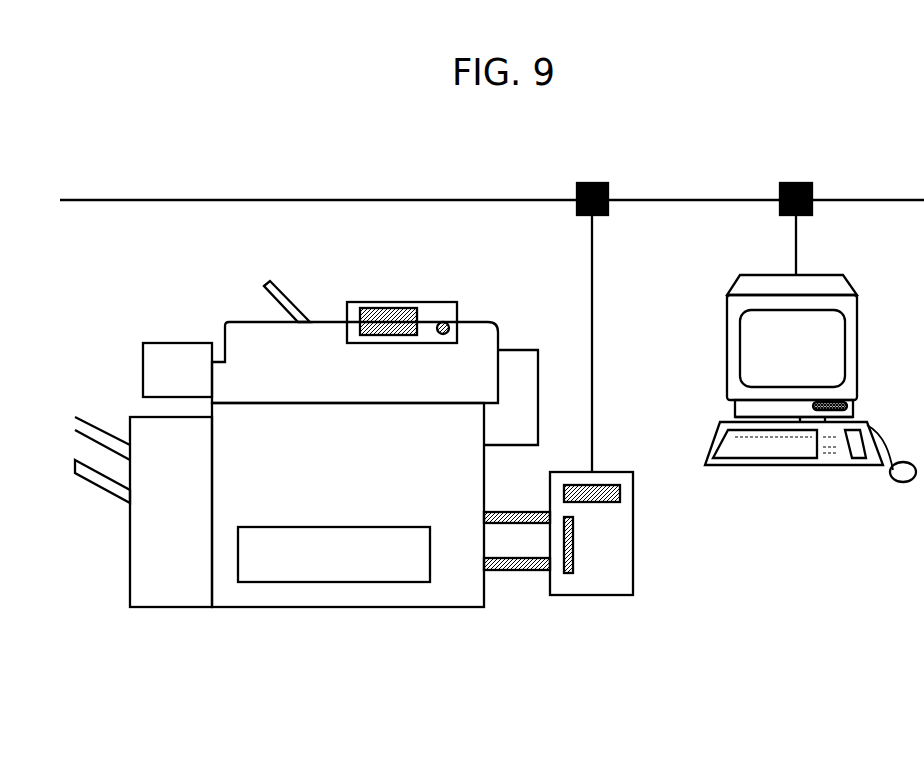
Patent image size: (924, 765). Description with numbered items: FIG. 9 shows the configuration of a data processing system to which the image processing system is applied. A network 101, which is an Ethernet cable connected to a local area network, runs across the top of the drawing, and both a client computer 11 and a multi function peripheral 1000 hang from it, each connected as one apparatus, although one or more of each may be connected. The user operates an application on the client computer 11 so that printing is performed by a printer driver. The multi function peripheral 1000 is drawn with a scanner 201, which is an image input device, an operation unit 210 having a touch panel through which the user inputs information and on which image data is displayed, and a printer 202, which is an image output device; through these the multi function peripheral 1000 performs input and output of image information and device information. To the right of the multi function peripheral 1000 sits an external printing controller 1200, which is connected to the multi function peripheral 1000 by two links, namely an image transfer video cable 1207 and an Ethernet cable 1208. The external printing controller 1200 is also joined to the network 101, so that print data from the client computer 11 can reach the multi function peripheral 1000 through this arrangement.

The network 101 is at (870, 198).
The multi function peripheral 1000 is at (433, 610).
The scanner 201 is at (236, 320).
The operation unit 210 is at (418, 300).
The printer 202 is at (332, 525).
The image transfer video cable 1207 is at (510, 511).
The Ethernet cable 1208 is at (518, 573).
The external printing controller 1200 is at (595, 598).
The client computer 11 is at (763, 468).